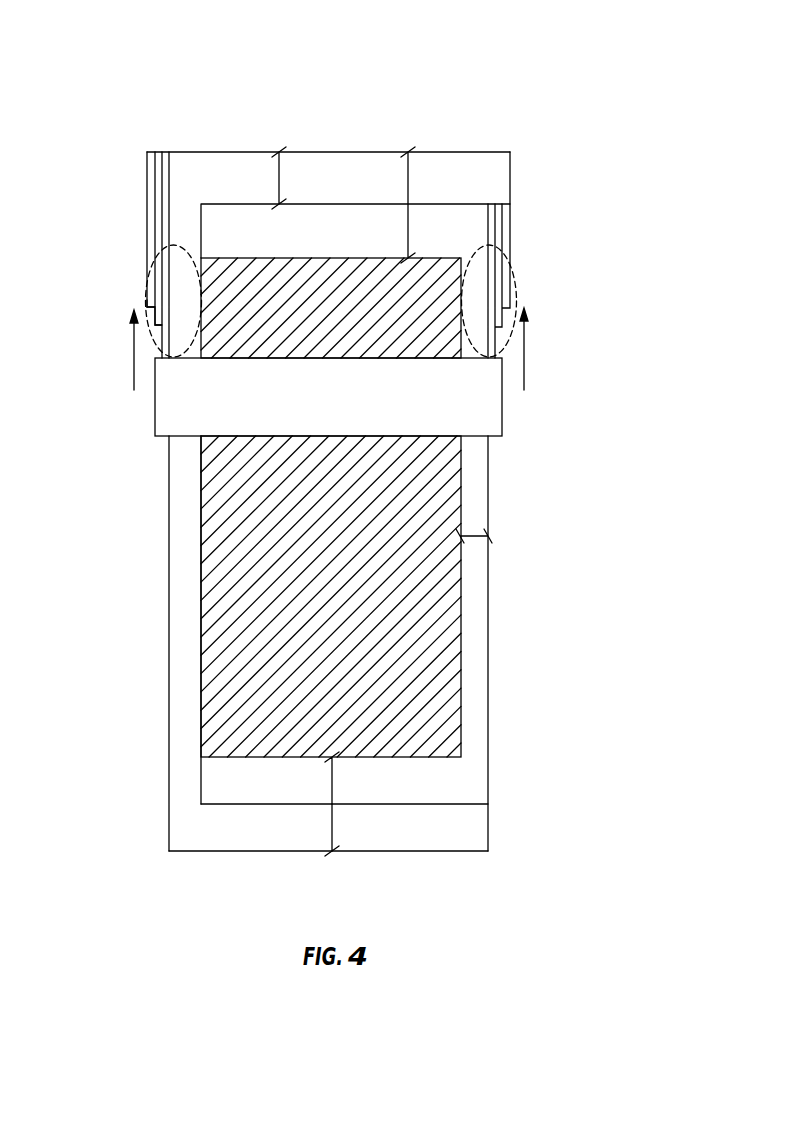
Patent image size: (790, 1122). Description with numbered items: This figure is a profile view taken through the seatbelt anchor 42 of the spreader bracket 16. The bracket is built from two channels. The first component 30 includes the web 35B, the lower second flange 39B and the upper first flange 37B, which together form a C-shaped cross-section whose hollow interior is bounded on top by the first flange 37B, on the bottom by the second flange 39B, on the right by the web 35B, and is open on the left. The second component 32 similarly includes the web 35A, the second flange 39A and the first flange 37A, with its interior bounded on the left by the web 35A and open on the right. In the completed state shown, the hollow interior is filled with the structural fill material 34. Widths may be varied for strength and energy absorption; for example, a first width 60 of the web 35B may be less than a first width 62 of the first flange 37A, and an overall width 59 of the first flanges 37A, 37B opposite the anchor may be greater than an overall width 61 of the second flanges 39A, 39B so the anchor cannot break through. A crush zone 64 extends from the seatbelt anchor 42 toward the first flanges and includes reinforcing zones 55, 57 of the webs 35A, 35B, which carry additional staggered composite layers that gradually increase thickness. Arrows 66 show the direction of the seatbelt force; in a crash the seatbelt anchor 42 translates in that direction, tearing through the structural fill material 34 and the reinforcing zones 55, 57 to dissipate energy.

The spreader bracket 16 is at (512, 50).
The first component 30 is at (523, 492).
The second component 32 is at (108, 435).
The structural fill material 34 is at (443, 738).
The web 35A is at (183, 523).
The web 35B is at (477, 588).
The first flange 37A is at (198, 173).
The first flange 37B is at (459, 227).
The second flange 39A is at (215, 838).
The second flange 39B is at (436, 785).
The seatbelt anchor 42 is at (490, 422).
The reinforcing zone 55 is at (148, 275).
The reinforcing zone 57 is at (503, 258).
The overall width 59 is at (410, 167).
The first width 60 is at (472, 530).
The overall width 61 is at (332, 818).
The first width 62 is at (280, 167).
The crush zone 64 is at (148, 283).
The arrows 66 is at (134, 365).